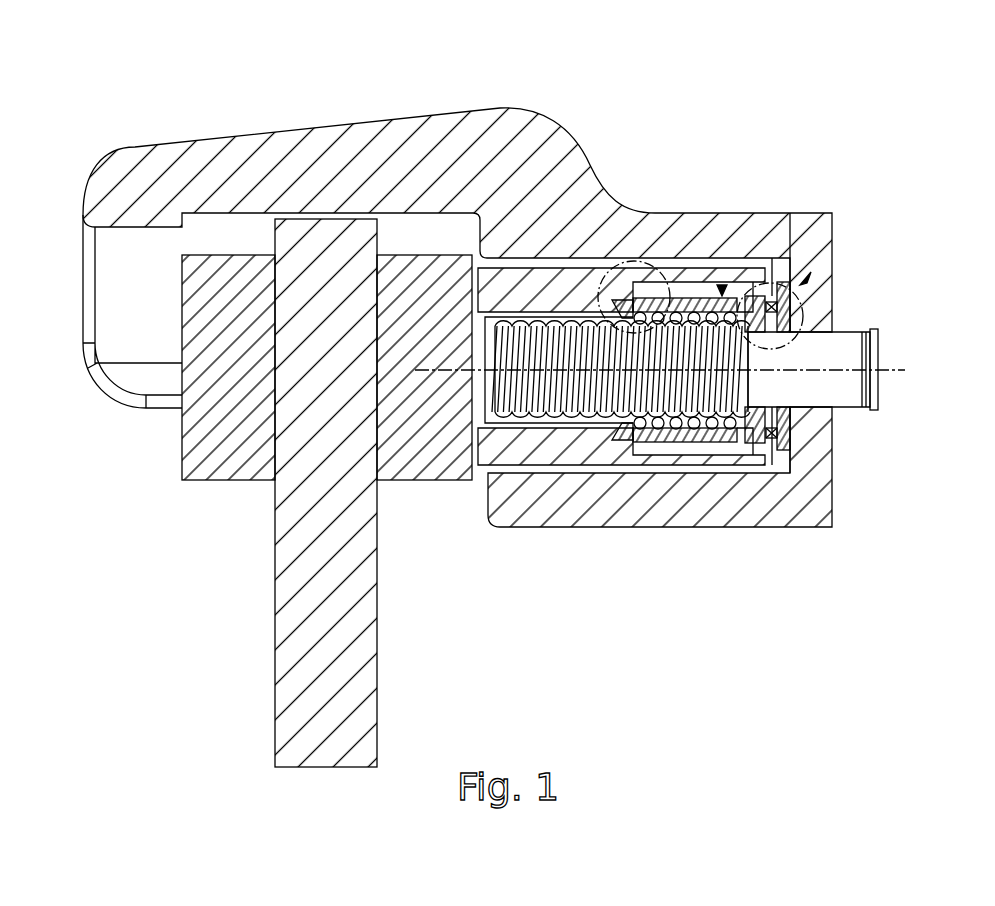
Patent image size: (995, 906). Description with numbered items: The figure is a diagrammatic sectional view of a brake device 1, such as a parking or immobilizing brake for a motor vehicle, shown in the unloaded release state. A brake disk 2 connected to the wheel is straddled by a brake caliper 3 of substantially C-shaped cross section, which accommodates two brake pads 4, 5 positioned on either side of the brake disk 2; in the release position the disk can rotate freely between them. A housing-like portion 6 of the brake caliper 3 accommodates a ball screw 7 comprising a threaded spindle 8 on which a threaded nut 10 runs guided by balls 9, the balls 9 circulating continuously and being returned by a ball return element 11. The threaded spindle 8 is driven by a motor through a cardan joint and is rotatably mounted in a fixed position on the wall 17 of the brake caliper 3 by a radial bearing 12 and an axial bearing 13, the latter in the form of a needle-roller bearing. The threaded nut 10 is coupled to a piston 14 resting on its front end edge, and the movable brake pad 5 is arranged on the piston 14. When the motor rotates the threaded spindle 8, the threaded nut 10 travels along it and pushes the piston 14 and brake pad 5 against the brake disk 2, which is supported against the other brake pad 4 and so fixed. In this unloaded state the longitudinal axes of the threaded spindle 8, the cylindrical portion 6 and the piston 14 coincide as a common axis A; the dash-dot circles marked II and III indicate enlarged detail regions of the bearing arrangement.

The brake device 1 is at (70, 262).
The brake disk 2 is at (367, 677).
The brake caliper 3 is at (600, 207).
The brake pad 4 is at (205, 470).
The brake pad 5 is at (442, 485).
The portion of the brake caliper 6 is at (683, 230).
The ball screw 7 is at (722, 285).
The threaded spindle 8 is at (852, 343).
The balls 9 is at (657, 445).
The threaded nut 10 is at (730, 445).
The ball return element 11 is at (678, 440).
The radial bearing 12 is at (830, 320).
The axial bearing 13 is at (830, 256).
The piston 14 is at (567, 455).
The wall of the brake caliper 17 is at (812, 500).
The common axis A is at (905, 370).
The detail II is at (648, 207).
The detail III is at (778, 256).